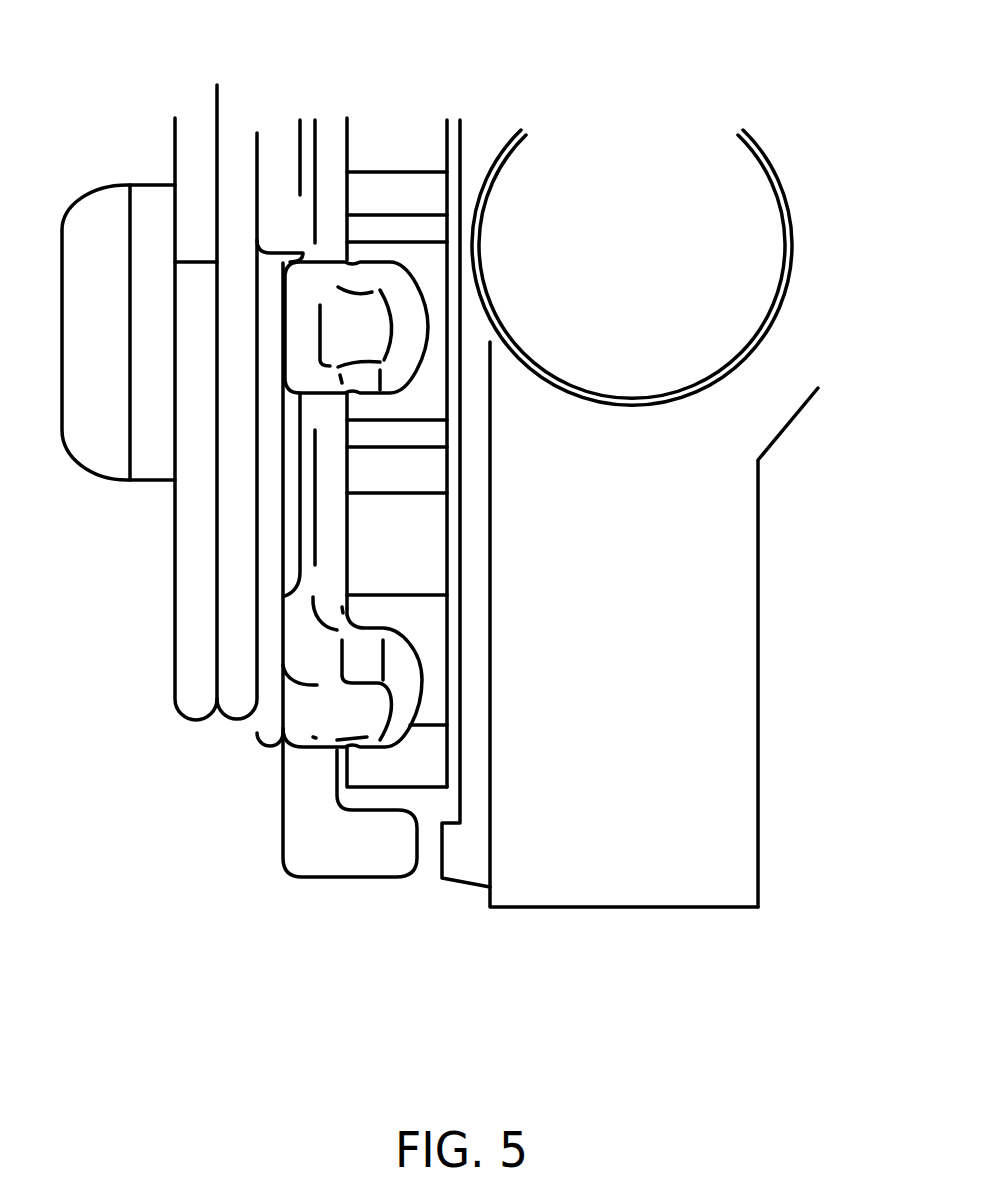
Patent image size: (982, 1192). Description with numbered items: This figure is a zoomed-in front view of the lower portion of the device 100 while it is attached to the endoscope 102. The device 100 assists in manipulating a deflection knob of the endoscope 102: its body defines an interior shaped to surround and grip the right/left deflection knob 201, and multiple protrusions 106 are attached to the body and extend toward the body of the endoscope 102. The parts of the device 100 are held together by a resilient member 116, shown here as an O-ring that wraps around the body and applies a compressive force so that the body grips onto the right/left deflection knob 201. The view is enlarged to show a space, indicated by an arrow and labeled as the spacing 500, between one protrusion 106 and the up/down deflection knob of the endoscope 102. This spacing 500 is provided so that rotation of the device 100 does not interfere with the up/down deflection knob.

The device 100 is at (174, 618).
The endoscope 102 is at (760, 783).
The protrusion 106 is at (398, 262).
The resilient member 116 is at (237, 697).
The right/left deflection knob 201 is at (430, 790).
The spacing 500 is at (410, 797).